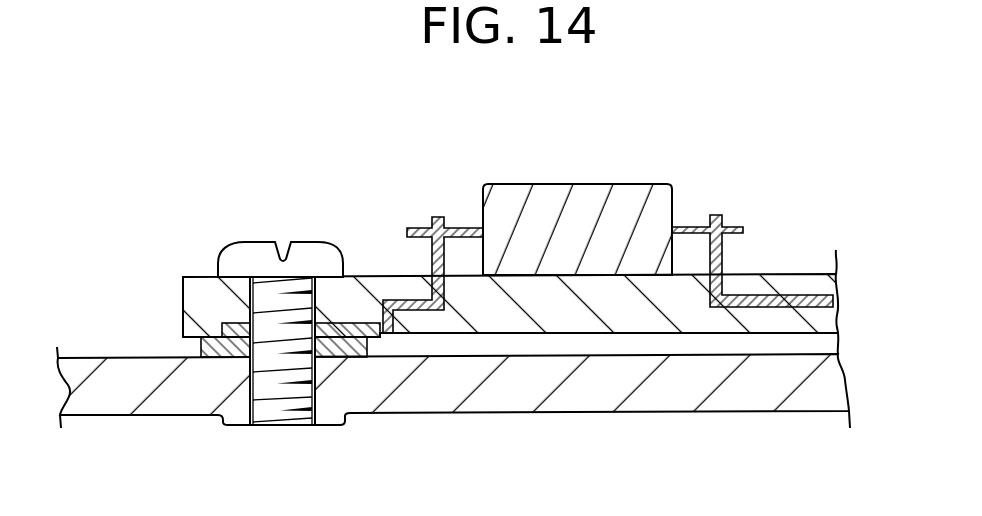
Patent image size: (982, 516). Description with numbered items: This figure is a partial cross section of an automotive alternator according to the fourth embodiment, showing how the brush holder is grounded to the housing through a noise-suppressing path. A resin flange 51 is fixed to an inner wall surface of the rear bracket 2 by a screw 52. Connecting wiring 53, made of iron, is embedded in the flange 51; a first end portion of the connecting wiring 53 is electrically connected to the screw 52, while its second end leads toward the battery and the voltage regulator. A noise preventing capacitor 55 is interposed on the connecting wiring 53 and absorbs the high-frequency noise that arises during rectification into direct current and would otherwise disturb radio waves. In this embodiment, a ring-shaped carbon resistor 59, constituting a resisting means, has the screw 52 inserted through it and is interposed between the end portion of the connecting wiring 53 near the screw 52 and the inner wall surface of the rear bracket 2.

The rear bracket 2 is at (132, 395).
The flange 51 is at (200, 300).
The screw 52 is at (283, 241).
The connecting wiring 53 is at (784, 300).
The noise preventing capacitor 55 is at (586, 212).
The ring-shaped carbon resistor 59 is at (221, 350).